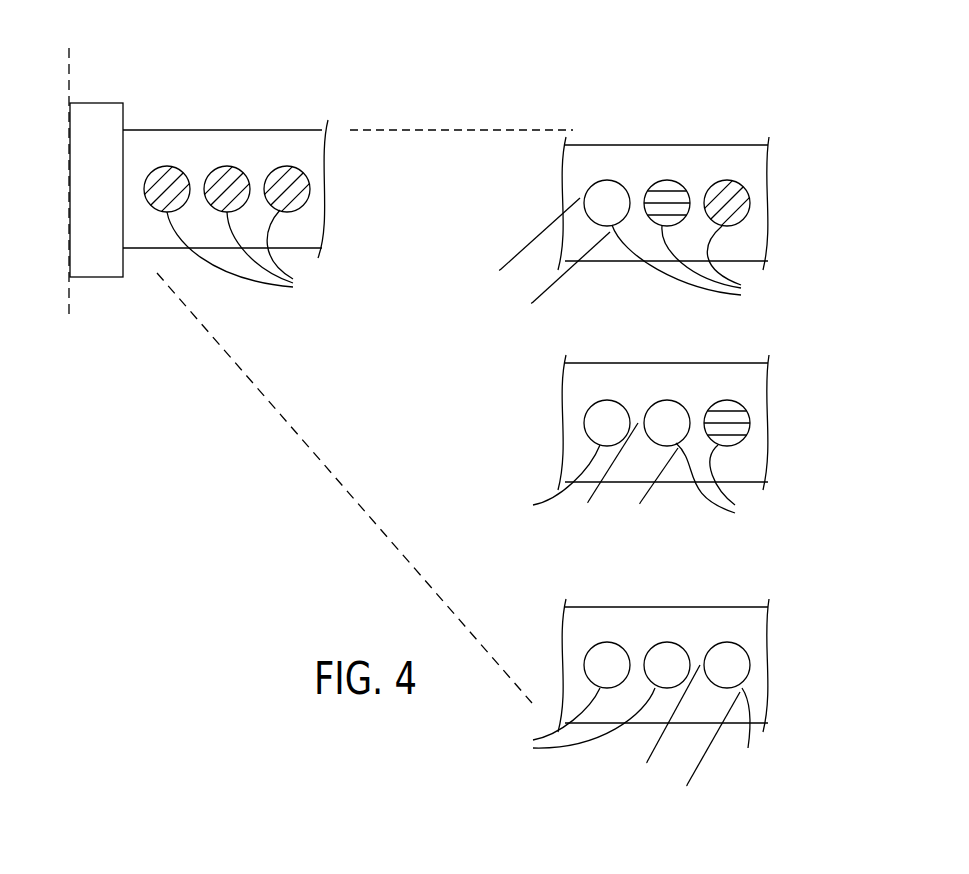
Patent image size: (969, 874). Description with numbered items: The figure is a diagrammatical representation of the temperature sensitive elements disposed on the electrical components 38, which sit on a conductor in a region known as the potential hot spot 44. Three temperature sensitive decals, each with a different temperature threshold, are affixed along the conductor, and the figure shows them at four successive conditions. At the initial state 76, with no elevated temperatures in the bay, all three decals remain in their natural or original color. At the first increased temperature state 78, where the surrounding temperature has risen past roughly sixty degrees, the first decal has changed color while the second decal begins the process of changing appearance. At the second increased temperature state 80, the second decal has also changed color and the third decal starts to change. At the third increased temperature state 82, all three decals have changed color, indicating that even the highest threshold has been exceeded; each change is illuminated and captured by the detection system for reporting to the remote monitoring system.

The electrical components 38 is at (94, 277).
The potential hot spot 44 is at (216, 72).
The initial state 76 is at (195, 350).
The first increased temperature state 78 is at (752, 102).
The second increased temperature state 80 is at (768, 352).
The third increased temperature state 82 is at (768, 600).